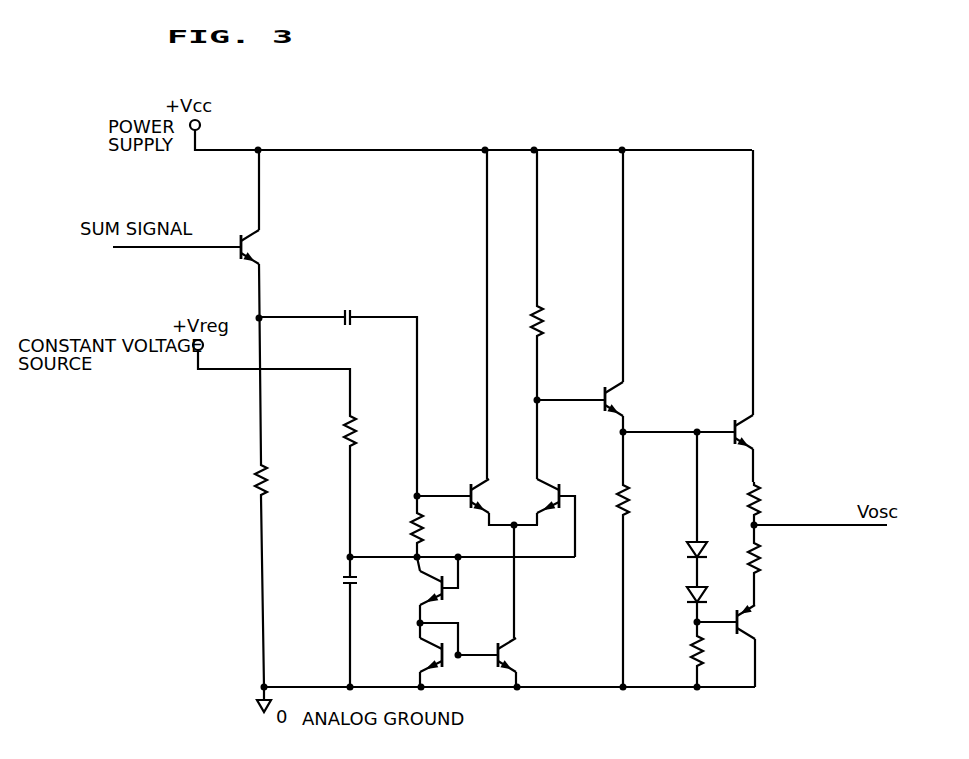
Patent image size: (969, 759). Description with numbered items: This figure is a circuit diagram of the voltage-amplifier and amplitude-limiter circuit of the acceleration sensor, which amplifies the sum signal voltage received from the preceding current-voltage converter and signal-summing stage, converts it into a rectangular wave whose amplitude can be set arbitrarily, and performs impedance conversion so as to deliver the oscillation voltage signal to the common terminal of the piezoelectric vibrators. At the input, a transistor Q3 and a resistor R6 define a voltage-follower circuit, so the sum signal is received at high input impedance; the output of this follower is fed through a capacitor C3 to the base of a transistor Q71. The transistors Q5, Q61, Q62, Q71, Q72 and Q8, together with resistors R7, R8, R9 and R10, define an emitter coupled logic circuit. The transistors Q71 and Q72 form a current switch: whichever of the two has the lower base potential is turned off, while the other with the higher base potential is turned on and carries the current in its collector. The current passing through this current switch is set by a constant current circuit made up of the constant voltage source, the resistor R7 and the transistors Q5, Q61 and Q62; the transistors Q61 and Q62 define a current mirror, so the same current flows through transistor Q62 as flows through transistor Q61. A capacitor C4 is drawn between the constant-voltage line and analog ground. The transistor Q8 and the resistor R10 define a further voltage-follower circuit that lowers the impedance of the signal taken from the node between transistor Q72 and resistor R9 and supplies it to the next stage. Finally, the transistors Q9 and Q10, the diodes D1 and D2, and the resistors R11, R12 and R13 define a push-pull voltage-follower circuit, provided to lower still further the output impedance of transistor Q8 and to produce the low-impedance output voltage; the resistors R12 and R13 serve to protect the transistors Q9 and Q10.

The transistor Q3 is at (269, 247).
The capacitor C3 is at (349, 305).
The resistor R6 is at (245, 479).
The resistor R7 is at (333, 430).
The capacitor C4 is at (334, 587).
The resistor R8 is at (405, 525).
The resistor R9 is at (554, 320).
The transistor Q71 is at (465, 485).
The transistor Q72 is at (563, 485).
The transistor Q5 is at (415, 589).
The transistor Q61 is at (410, 655).
The transistor Q62 is at (531, 655).
The transistor Q8 is at (633, 399).
The transistor Q9 is at (766, 432).
The resistor R10 is at (645, 499).
The resistor R12 is at (776, 499).
The resistor R13 is at (776, 557).
The diode D1 is at (680, 550).
The diode D2 is at (680, 598).
The resistor R11 is at (675, 650).
The transistor Q10 is at (772, 625).